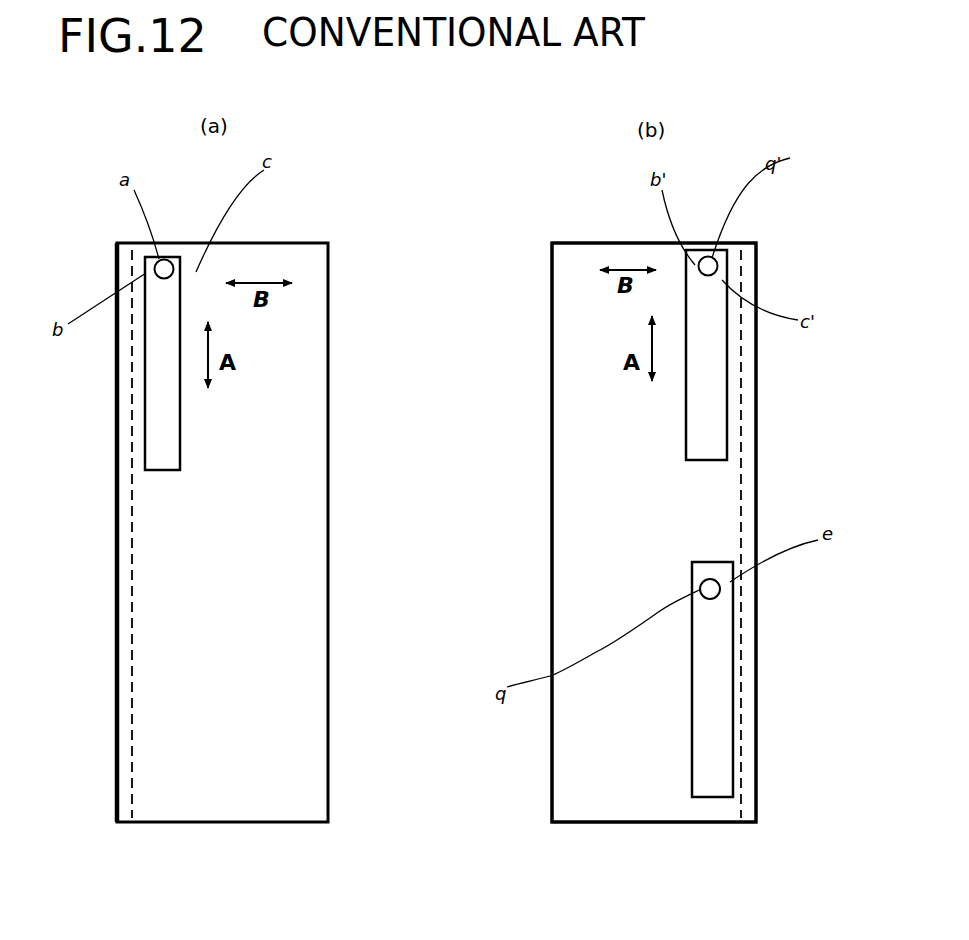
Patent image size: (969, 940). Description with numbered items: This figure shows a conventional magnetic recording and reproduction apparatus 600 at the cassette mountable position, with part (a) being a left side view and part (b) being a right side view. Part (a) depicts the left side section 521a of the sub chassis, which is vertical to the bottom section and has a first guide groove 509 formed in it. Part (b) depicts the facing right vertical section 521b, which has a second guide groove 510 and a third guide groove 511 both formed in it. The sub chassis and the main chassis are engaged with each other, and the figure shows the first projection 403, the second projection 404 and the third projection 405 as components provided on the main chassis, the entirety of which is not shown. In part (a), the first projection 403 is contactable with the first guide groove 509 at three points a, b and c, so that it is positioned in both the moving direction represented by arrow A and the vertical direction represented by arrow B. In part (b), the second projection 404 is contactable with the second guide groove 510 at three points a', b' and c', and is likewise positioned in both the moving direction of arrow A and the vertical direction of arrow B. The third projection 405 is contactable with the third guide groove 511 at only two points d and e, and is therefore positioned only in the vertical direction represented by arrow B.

The conventional magnetic recording and reproduction apparatus 600 is at (737, 90).
The first projection 403 is at (165, 259).
The second projection 404 is at (716, 267).
The third projection 405 is at (726, 596).
The first guide groove 509 is at (153, 378).
The second guide groove 510 is at (712, 380).
The third guide groove 511 is at (726, 655).
The left side section 521a is at (219, 810).
The right vertical section 521b is at (580, 808).